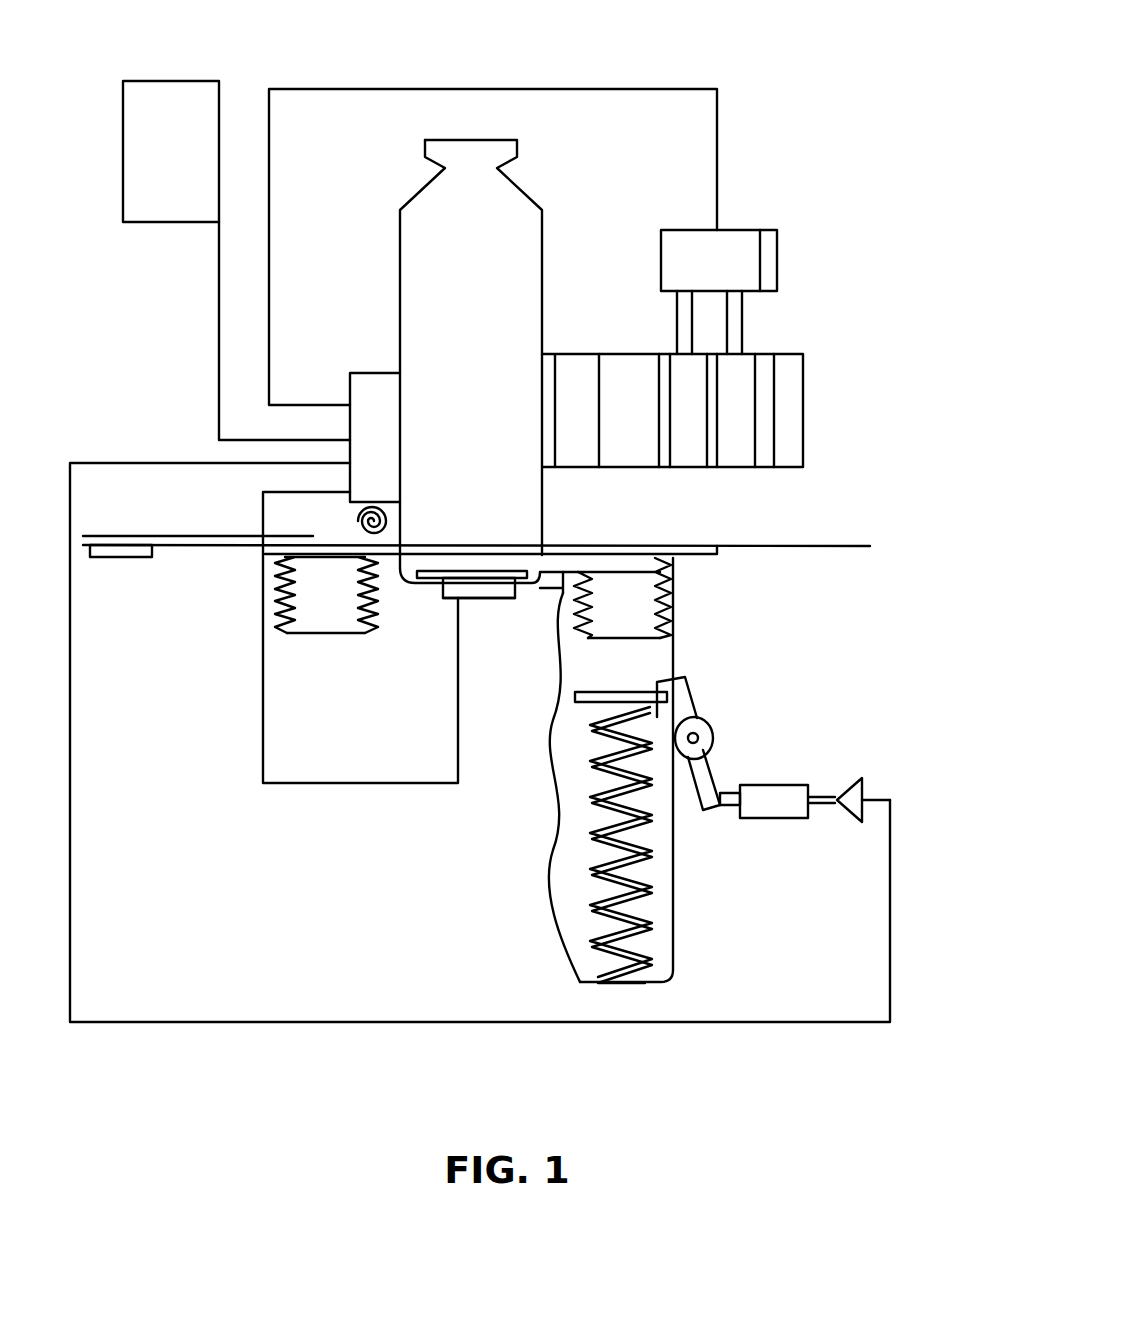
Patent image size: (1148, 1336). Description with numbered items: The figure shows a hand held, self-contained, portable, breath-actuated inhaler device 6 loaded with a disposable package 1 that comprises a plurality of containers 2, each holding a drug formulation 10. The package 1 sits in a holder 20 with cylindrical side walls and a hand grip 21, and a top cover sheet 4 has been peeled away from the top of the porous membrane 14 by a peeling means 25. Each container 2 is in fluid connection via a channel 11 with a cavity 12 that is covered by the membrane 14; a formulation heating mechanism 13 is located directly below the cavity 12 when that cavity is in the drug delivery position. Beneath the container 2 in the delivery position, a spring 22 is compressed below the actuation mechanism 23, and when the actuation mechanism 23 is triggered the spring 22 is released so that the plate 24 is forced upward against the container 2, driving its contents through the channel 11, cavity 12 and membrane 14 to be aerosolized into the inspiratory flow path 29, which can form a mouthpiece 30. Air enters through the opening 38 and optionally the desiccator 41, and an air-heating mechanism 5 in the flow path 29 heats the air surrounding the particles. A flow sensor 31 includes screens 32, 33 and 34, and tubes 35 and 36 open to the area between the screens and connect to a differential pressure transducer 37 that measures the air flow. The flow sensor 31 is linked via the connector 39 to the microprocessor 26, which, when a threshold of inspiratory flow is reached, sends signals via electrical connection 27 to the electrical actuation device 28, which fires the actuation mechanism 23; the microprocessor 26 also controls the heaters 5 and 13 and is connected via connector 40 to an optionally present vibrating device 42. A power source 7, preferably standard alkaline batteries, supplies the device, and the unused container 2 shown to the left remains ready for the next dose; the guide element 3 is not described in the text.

The disposable package 1 is at (878, 548).
The container 2 is at (327, 633).
The guide plate 3 is at (697, 553).
The top cover sheet 4 is at (313, 535).
The air-heating mechanism 5 is at (580, 455).
The drug delivery device 6 is at (880, 473).
The power source 7 is at (168, 92).
The drug formulation 10 is at (473, 597).
The channel 11 is at (548, 562).
The cavity 12 is at (432, 560).
The formulation heating mechanism 13 is at (462, 577).
The porous membrane 14 is at (483, 545).
The holder 20 is at (675, 873).
The hand grip 21 is at (557, 865).
The spring 22 is at (642, 918).
The actuation mechanism 23 is at (682, 703).
The plate 24 is at (575, 695).
The peeling means 25 is at (387, 537).
The microprocessor 26 is at (375, 437).
The electrical connection 27 is at (203, 1022).
The electrical actuation device 28 is at (787, 793).
The inspiratory flow path 29 is at (545, 412).
The mouthpiece 30 is at (420, 187).
The flow sensor 31 is at (790, 210).
The screen 32 is at (763, 448).
The screen 33 is at (713, 448).
The screen 34 is at (666, 455).
The tube 35 is at (685, 323).
The tube 36 is at (737, 328).
The differential pressure transducer 37 is at (719, 260).
The opening 38 is at (764, 411).
The connector 39 is at (378, 88).
The connector 40 is at (290, 783).
The desiccator 41 is at (803, 372).
The vibrating device 42 is at (470, 598).